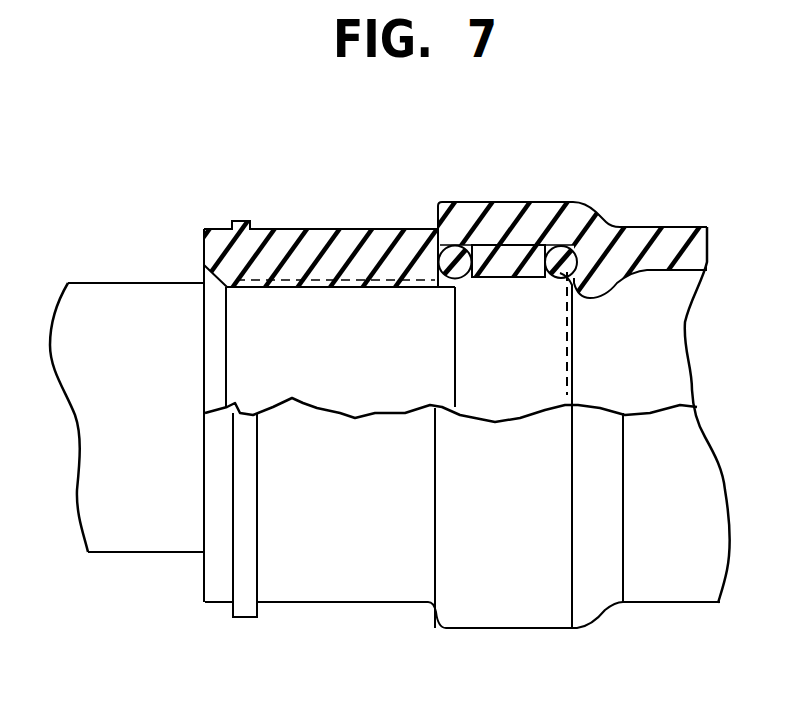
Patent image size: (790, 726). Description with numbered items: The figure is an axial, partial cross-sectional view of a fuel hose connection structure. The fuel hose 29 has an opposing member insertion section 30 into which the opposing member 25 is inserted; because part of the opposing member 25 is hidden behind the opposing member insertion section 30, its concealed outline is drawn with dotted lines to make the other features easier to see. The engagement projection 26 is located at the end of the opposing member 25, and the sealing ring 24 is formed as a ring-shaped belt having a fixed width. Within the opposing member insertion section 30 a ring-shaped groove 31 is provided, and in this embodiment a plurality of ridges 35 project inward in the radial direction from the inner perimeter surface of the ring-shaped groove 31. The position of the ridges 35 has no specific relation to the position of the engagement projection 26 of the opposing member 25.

The sealing ring 24 is at (498, 278).
The opposing member 25 is at (569, 357).
The engagement projection 26 is at (543, 280).
The fuel hose 29 is at (673, 224).
The opposing member insertion section 30 is at (302, 229).
The ring-shaped groove 31 is at (445, 238).
The ridges 35 is at (458, 250).